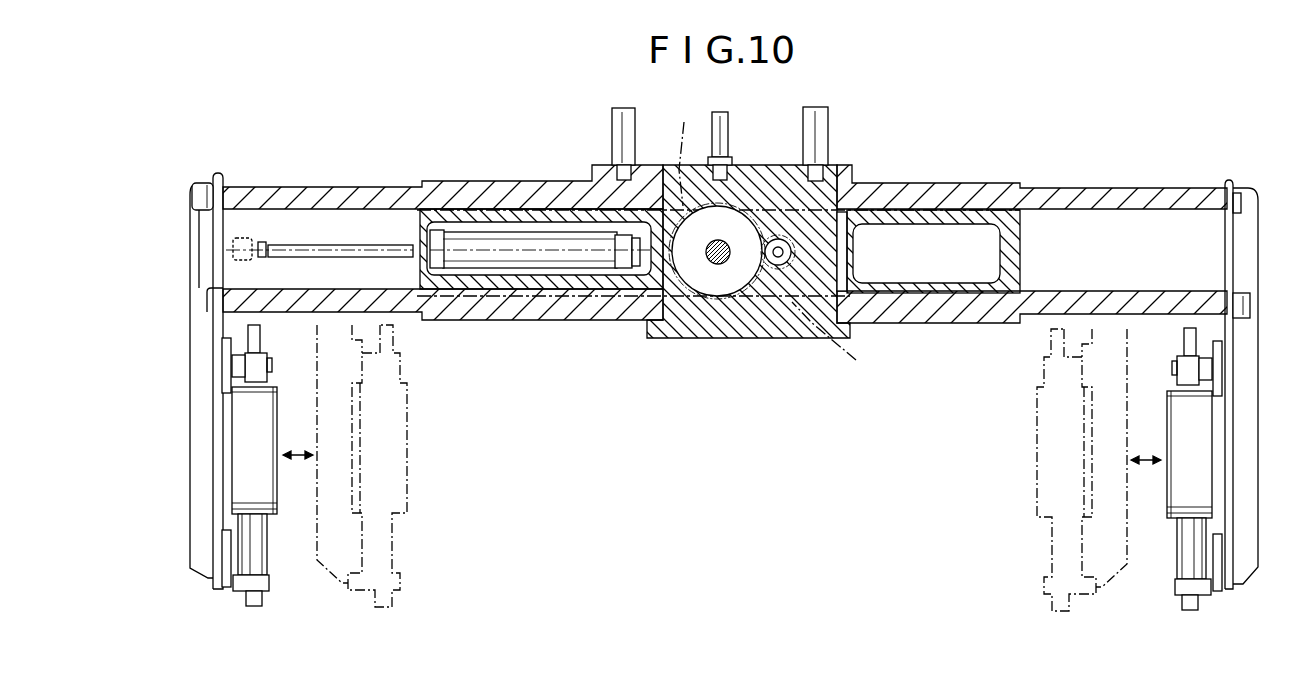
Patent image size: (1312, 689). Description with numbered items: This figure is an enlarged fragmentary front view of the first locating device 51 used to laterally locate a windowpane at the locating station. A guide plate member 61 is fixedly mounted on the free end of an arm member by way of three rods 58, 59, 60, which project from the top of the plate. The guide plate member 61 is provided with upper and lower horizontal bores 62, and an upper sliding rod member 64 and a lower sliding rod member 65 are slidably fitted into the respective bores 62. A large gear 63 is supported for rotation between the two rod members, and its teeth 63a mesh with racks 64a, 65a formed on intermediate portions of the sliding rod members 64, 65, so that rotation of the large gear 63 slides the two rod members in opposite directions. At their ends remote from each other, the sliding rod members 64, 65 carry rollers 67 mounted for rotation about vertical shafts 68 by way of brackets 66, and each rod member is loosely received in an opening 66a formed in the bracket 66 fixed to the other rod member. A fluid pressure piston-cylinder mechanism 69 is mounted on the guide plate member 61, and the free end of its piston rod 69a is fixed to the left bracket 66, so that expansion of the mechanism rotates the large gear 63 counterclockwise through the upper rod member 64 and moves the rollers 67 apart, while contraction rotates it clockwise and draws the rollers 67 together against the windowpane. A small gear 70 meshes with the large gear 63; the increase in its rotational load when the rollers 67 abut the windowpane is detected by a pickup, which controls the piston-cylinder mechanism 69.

The first locating device 51 is at (852, 134).
The rod 58 is at (730, 117).
The rod 59 is at (612, 118).
The rod 60 is at (830, 138).
The guide plate member 61 is at (938, 184).
The horizontal bore 62 is at (978, 195).
The large gear 63 is at (730, 282).
The teeth 63a is at (780, 292).
The upper sliding rod member 64 is at (393, 187).
The rack 64a is at (675, 152).
The lower sliding rod member 65 is at (407, 313).
The rack 65a is at (839, 342).
The bracket 66 is at (190, 362).
The opening 66a is at (207, 292).
The roller 67 is at (410, 468).
The vertical shaft 68 is at (262, 332).
The fluid pressure piston-cylinder mechanism 69 is at (557, 265).
The piston rod 69a is at (330, 258).
The small gear 70 is at (843, 252).